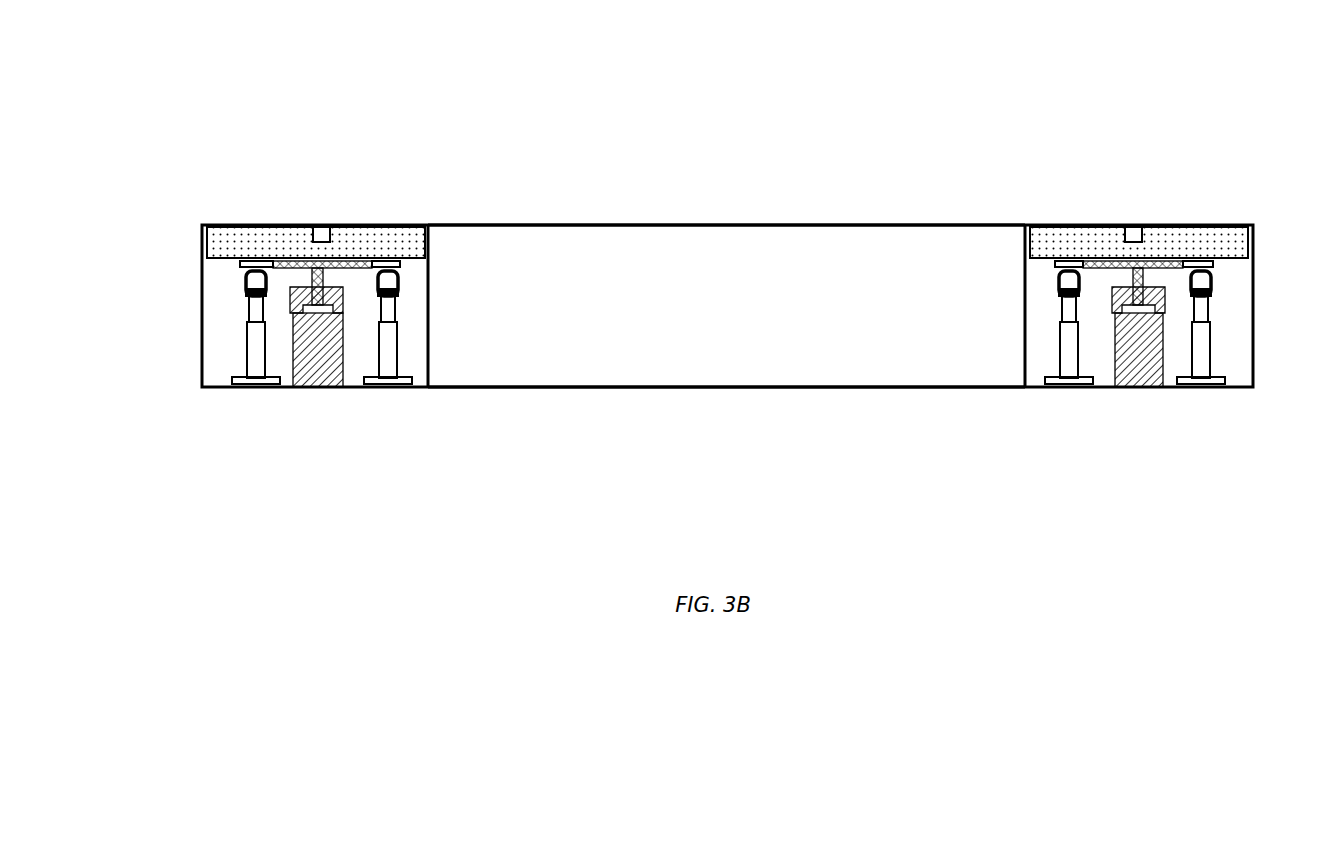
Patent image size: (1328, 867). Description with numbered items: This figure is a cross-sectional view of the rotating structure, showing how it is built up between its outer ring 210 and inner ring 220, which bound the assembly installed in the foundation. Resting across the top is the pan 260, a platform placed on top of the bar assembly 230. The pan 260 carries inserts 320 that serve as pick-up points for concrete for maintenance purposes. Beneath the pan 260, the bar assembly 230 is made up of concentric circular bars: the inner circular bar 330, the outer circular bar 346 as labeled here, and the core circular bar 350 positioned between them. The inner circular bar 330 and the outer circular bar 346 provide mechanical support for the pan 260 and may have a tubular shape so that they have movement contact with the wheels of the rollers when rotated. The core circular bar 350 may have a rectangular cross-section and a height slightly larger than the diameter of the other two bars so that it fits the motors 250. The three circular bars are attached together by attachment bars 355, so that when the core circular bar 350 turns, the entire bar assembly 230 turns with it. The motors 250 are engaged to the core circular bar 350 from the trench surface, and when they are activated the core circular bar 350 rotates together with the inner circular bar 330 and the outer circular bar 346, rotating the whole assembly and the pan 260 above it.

The outer ring 210 is at (1257, 277).
The inner ring 220 is at (930, 368).
The bar assembly 230 is at (430, 255).
The motor 250 is at (310, 387).
The pan 260 is at (232, 228).
The insert 320 is at (1150, 162).
The inner circular bar 330 is at (753, 163).
The outer circular bar 346 is at (246, 263).
The core circular bar 350 is at (338, 284).
The attachment bar 355 is at (354, 262).